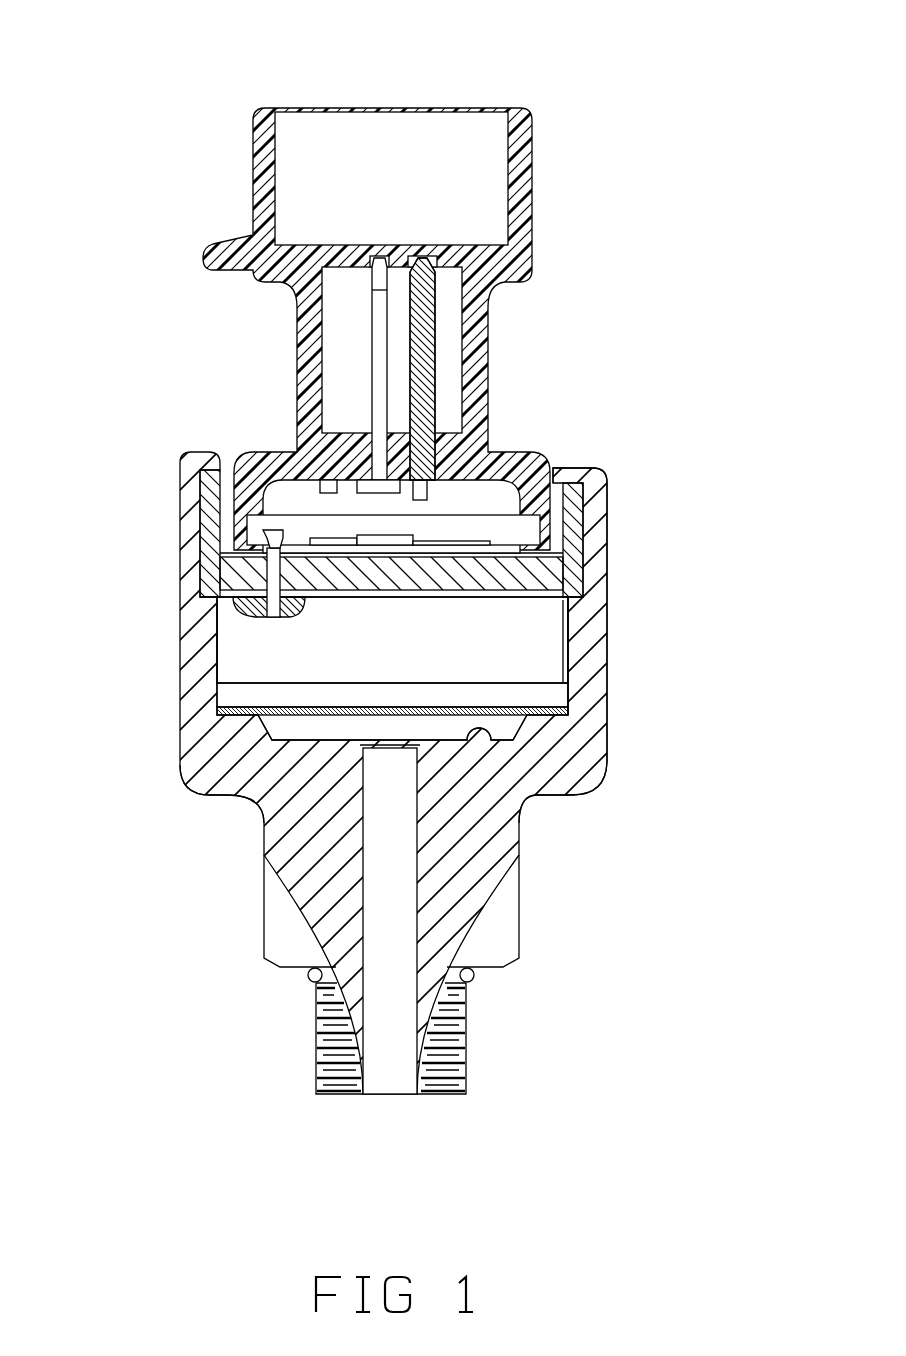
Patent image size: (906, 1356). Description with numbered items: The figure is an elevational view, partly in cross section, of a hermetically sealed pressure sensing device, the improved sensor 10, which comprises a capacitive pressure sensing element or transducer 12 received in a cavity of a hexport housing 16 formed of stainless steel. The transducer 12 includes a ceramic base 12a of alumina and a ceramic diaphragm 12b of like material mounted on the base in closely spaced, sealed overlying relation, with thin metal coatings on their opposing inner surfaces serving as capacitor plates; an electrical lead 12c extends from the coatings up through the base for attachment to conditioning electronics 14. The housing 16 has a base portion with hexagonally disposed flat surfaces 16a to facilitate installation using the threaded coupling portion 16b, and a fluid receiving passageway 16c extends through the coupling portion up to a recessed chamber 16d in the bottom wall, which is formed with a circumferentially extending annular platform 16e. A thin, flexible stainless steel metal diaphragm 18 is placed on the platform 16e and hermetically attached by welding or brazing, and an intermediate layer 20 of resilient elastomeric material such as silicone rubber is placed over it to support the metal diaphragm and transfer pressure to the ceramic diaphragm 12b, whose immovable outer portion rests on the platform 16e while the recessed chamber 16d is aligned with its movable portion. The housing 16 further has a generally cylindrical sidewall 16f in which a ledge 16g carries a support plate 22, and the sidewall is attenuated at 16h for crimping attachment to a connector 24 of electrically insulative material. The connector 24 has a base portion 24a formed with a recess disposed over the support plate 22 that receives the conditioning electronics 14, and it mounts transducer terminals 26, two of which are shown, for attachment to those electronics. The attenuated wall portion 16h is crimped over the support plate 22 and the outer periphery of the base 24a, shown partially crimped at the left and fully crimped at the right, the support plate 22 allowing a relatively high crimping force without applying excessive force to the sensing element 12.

The sensor 10 is at (232, 83).
The capacitive pressure sensing element 12 is at (250, 650).
The ceramic base 12a is at (412, 628).
The ceramic diaphragm 12b is at (450, 690).
The electrical lead 12c is at (291, 606).
The conditioning electronics 14 is at (447, 537).
The hexport housing 16 is at (596, 742).
The hexagonally disposed flat surfaces 16a is at (492, 928).
The threaded coupling portion 16b is at (450, 1060).
The fluid receiving passageway 16c is at (417, 1050).
The recessed chamber 16d is at (480, 733).
The annular platform 16e is at (588, 782).
The cylindrical sidewall 16f is at (595, 653).
The ledge 16g is at (577, 597).
The attenuated wall portion 16h is at (592, 478).
The metal diaphragm 18 is at (253, 800).
The intermediate layer 20 is at (220, 723).
The support plate 22 is at (573, 568).
The connector 24 is at (527, 158).
The base portion 24a is at (513, 458).
The transducer terminals 26 is at (422, 258).